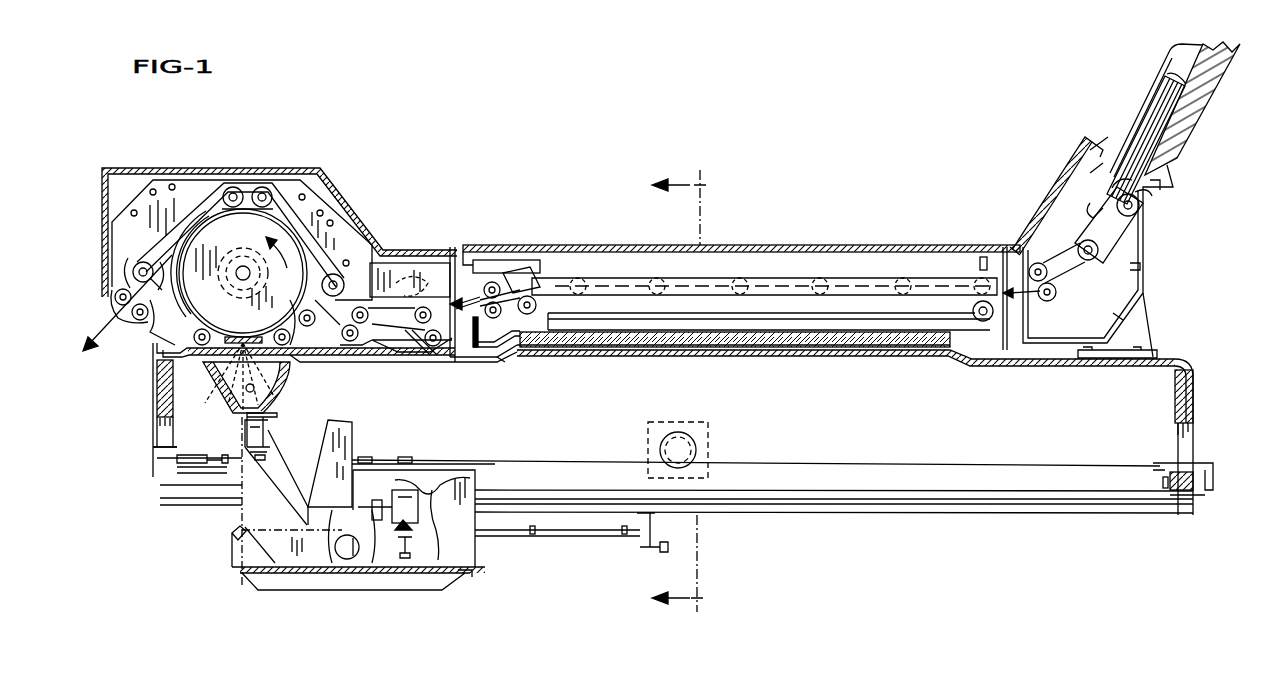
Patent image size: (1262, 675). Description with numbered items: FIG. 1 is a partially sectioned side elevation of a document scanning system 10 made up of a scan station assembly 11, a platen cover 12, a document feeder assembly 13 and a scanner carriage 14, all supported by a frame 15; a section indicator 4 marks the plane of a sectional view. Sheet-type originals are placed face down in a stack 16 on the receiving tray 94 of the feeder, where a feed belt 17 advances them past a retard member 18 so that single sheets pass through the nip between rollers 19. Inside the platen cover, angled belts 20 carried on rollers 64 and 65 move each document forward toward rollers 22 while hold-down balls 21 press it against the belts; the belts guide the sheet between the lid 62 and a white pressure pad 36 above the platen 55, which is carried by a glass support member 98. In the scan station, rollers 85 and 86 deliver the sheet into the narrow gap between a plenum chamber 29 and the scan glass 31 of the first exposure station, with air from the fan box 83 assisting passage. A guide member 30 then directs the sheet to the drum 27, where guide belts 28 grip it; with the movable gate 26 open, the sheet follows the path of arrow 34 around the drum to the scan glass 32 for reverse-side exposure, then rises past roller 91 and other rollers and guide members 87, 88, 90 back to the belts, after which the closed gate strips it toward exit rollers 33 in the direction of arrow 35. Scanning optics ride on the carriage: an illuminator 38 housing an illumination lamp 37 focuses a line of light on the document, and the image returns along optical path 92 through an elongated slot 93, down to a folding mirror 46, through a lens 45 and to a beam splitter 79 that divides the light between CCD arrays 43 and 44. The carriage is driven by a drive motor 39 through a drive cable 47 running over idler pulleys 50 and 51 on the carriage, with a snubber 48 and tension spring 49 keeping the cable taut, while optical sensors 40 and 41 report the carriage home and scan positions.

The document scanning system 10 is at (788, 158).
The scan station assembly 11 is at (370, 197).
The platen cover 12 is at (815, 240).
The document feeder assembly 13 is at (1069, 140).
The scanner carriage assembly 14 is at (240, 604).
The frame 15 is at (1190, 368).
The stack 16 is at (1160, 94).
The feed belt 17 is at (1150, 239).
The retard member 18 is at (1088, 208).
The rollers 19 is at (1030, 264).
The belts 20 is at (868, 290).
The hold-down balls 21 is at (745, 277).
The rollers 22 is at (497, 301).
The movable gate 26 is at (143, 262).
The drum 27 is at (325, 208).
The guide belts 28 is at (272, 185).
The plenum chamber 29 is at (418, 347).
The guide member 30 is at (306, 327).
The scan glass 31 is at (398, 350).
The scan glass 32 is at (244, 334).
The exit rollers 33 is at (110, 318).
The arrow 34 is at (186, 287).
The arrow 35 is at (198, 250).
The pressure pad 36 is at (918, 357).
The illumination lamp 37 is at (218, 396).
The illuminator 38 is at (198, 389).
The drive motor 39 is at (698, 452).
The optical sensor 40 is at (620, 529).
The optical sensor 41 is at (528, 528).
The CCD array 43 is at (437, 478).
The CCD array 44 is at (470, 571).
The lens 45 is at (334, 575).
The folding mirror 46 is at (230, 537).
The drive cable 47 is at (1065, 465).
The snubber 48 is at (1152, 480).
The tension spring 49 is at (1199, 491).
The idler pulley 50 is at (405, 457).
The idler pulley 51 is at (368, 457).
The platen 55 is at (828, 350).
The lid 62 is at (606, 245).
The roller 64 is at (537, 296).
The roller 65 is at (978, 302).
The beam splitter 79 is at (425, 545).
The fan box 83 is at (385, 262).
The roller 85 is at (403, 293).
The roller 86 is at (437, 362).
The roller 87 is at (340, 280).
The arm 88 is at (356, 346).
The roller 90 is at (195, 337).
The roller 91 is at (280, 347).
The optical path 92 is at (235, 520).
The elongated slot 93 is at (241, 423).
The receiving tray 94 is at (1205, 101).
The glass support member 98 is at (506, 360).
The section line 4 is at (689, 392).